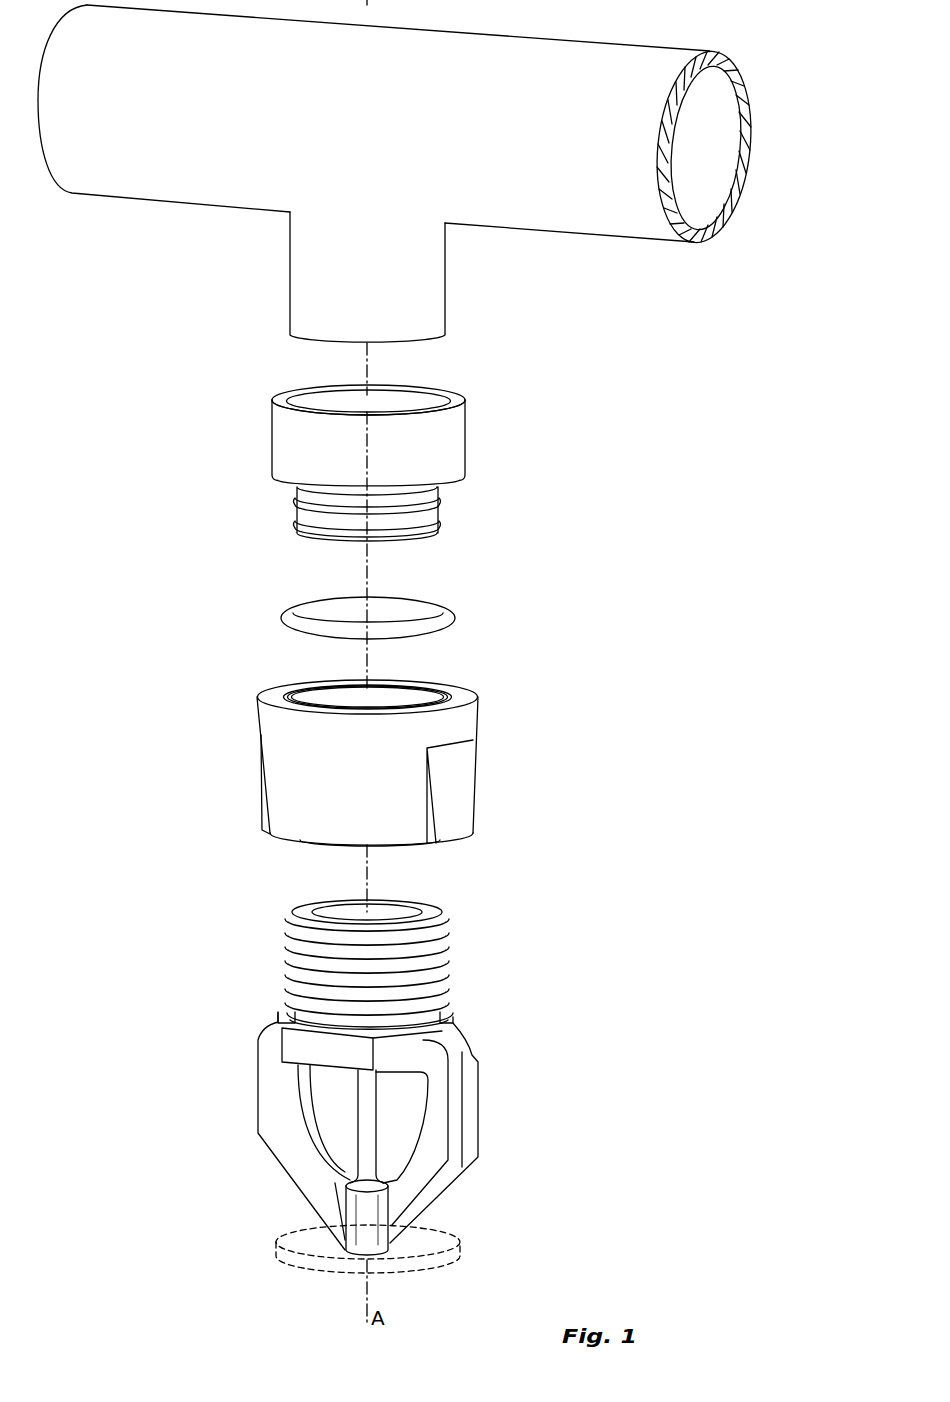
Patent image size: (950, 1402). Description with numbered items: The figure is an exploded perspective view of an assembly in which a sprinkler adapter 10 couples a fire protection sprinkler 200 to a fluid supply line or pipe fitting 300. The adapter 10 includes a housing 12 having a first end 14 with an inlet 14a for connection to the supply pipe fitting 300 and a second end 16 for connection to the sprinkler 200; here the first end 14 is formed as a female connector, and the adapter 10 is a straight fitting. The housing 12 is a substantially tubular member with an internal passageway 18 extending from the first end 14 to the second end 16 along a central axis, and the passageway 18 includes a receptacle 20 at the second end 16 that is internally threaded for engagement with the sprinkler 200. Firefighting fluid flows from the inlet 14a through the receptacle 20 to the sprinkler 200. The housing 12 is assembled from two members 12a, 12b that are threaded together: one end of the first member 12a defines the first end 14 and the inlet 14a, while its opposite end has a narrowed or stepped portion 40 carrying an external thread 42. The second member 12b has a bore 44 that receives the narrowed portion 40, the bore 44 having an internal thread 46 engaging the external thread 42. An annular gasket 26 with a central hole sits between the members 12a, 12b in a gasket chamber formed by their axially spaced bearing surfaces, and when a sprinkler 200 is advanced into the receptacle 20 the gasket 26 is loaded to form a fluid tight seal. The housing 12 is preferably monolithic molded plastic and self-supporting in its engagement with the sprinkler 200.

The fluid supply pipe fitting 300 is at (445, 278).
The sprinkler adapter 10 is at (525, 390).
The housing 12 is at (175, 377).
The first member 12a is at (360, 437).
The second member 12b is at (369, 761).
The first end 14 is at (272, 395).
The inlet 14a is at (420, 368).
The second end 16 is at (268, 832).
The internal passageway 18 is at (280, 372).
The receptacle 20 is at (418, 850).
The gasket 26 is at (455, 606).
The narrowed portion 40 is at (438, 503).
The external thread 42 is at (438, 522).
The bore 44 is at (425, 668).
The internal thread 46 is at (430, 693).
The fire protection sprinkler 200 is at (453, 1028).